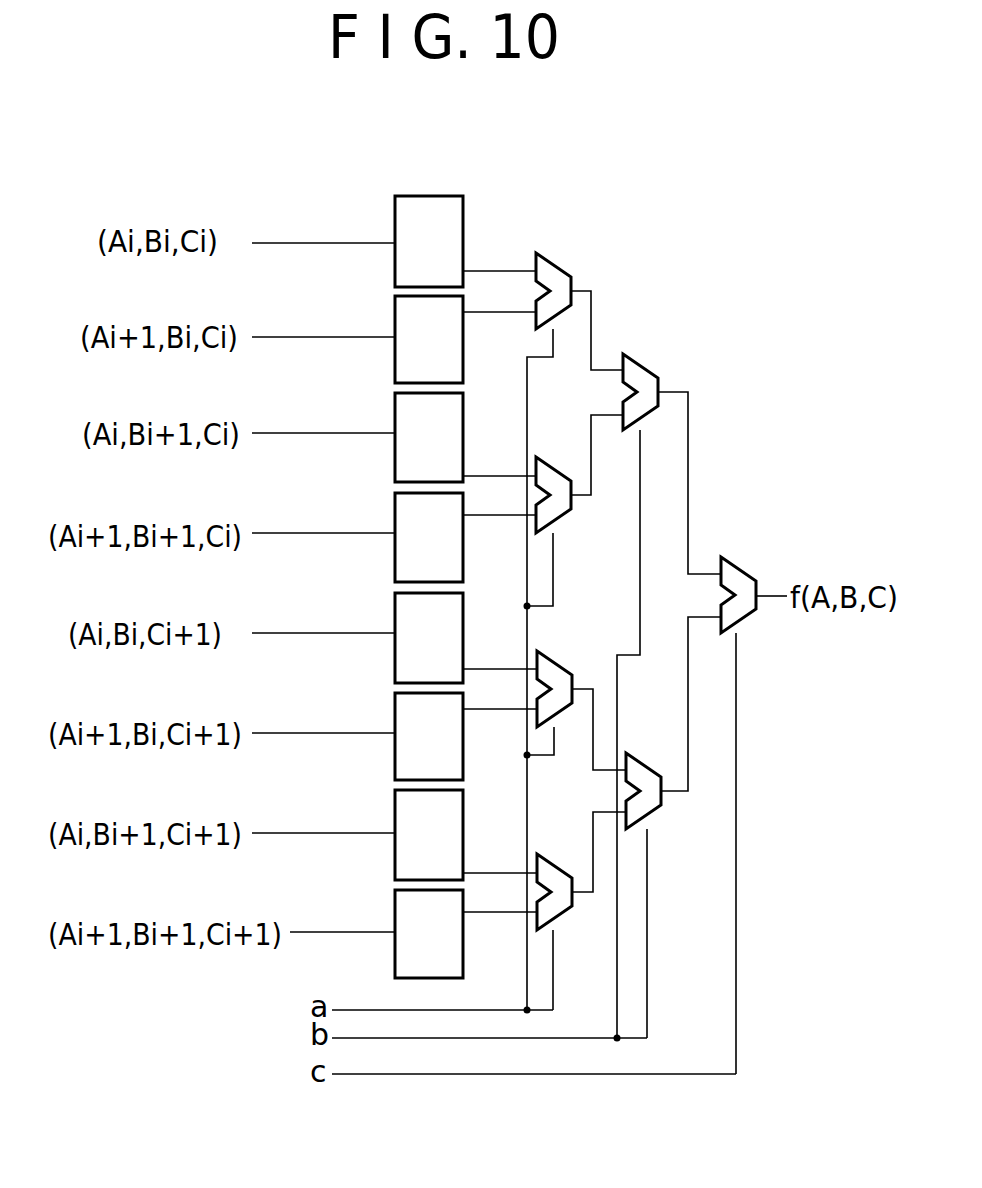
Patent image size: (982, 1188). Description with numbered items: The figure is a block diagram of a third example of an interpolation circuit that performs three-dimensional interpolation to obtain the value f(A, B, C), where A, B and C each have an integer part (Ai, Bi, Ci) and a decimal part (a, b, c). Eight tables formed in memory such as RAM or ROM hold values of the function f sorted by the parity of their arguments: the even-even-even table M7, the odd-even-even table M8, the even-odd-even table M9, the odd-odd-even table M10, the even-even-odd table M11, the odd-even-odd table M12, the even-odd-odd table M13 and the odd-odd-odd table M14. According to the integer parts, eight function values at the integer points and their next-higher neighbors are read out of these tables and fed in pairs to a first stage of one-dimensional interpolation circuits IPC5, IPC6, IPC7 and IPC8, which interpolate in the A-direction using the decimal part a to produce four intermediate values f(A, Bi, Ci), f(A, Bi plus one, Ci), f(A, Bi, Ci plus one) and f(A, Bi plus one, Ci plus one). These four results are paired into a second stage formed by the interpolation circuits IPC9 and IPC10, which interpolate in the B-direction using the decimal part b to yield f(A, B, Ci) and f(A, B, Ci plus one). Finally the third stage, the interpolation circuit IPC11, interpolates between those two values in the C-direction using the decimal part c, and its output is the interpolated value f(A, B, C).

The even-even-even table M7 is at (463, 213).
The odd-even-even table M8 is at (395, 358).
The even-odd-even table M9 is at (395, 406).
The odd-odd-even table M10 is at (395, 565).
The even-even-odd table M11 is at (395, 600).
The odd-even-odd table M12 is at (395, 760).
The even-odd-odd table M13 is at (395, 808).
The odd-odd-odd table M14 is at (395, 965).
The one-dimensional interpolation circuit IPC5 is at (565, 273).
The one-dimensional interpolation circuit IPC6 is at (565, 517).
The one-dimensional interpolation circuit IPC7 is at (558, 662).
The one-dimensional interpolation circuit IPC8 is at (565, 915).
The one-dimensional interpolation circuit IPC9 is at (645, 365).
The one-dimensional interpolation circuit IPC10 is at (650, 820).
The one-dimensional interpolation circuit IPC11 is at (745, 568).